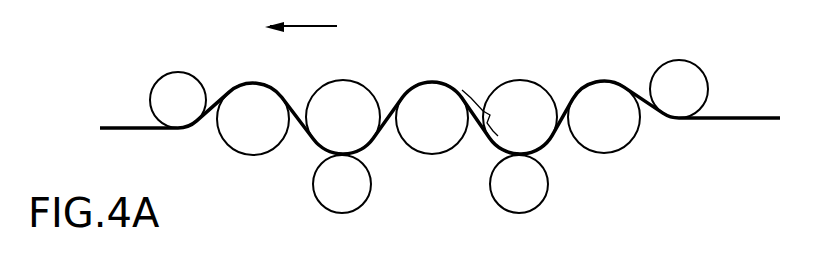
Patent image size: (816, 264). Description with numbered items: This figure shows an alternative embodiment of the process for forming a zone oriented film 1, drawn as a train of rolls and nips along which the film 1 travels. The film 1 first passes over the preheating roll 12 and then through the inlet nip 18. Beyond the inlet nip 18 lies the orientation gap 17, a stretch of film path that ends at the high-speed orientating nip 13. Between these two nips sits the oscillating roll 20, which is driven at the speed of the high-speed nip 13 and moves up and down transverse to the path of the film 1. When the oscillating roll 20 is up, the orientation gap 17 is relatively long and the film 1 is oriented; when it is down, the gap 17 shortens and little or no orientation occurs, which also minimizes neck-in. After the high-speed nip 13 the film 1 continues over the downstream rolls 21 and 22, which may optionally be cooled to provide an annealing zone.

The film 1 is at (110, 126).
The downstream roll 22 is at (175, 78).
The downstream roll 21 is at (233, 135).
The high-speed orientating nip 13 is at (363, 82).
The oscillating roll 20 is at (425, 137).
The orientation gap 17 is at (490, 113).
The inlet nip 18 is at (530, 92).
The preheating roll 12 is at (617, 88).